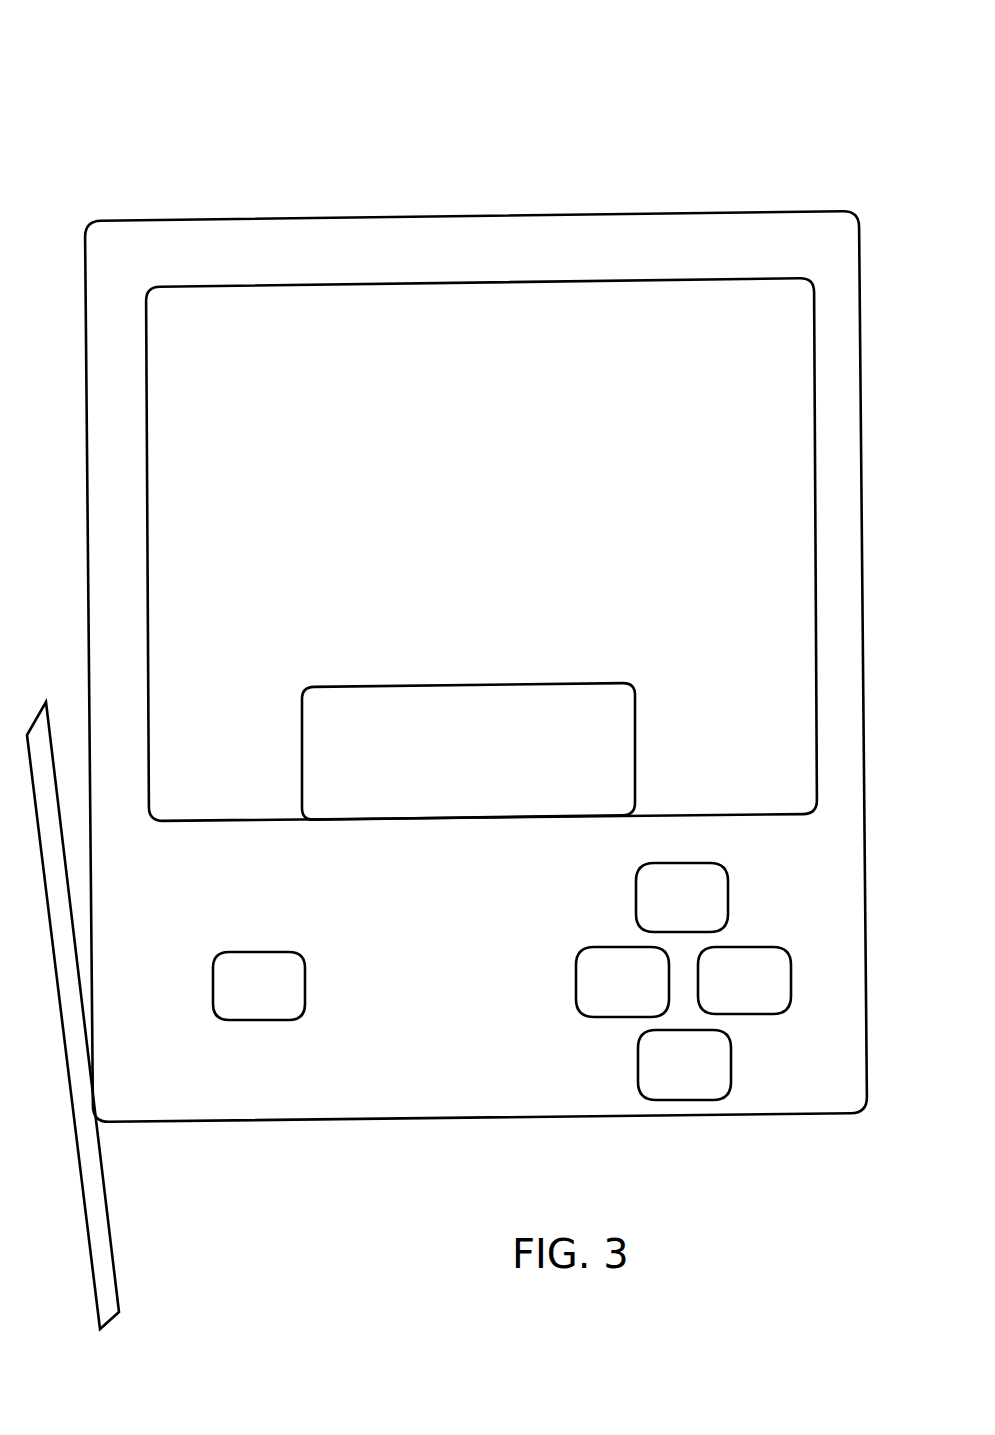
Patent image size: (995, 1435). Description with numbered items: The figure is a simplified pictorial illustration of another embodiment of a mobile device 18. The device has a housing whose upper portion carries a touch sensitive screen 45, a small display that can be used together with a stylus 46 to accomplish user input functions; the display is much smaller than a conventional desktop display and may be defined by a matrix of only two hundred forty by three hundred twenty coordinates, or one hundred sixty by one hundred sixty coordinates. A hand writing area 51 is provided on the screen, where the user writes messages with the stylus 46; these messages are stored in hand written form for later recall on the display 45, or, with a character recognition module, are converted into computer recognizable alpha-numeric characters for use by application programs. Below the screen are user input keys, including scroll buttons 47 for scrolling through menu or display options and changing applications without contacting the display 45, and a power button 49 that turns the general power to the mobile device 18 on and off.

The mobile device 18 is at (678, 180).
The touch sensitive screen 45 is at (282, 355).
The hand writing area 51 is at (332, 687).
The power button 49 is at (257, 987).
The scroll buttons 47 is at (622, 1068).
The stylus 46 is at (92, 1158).